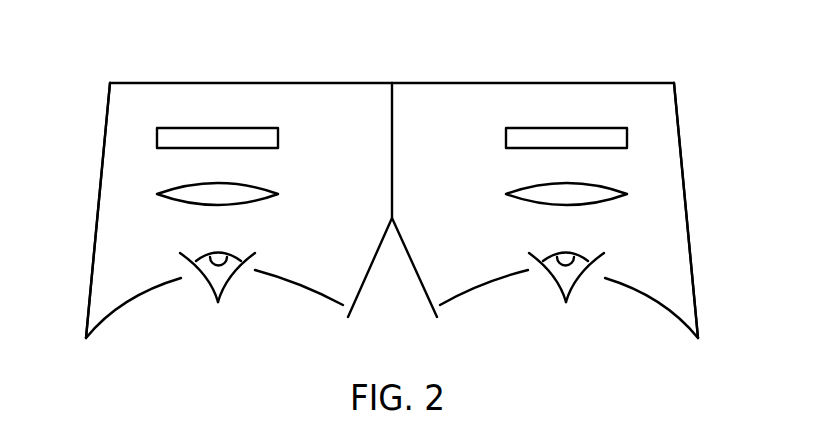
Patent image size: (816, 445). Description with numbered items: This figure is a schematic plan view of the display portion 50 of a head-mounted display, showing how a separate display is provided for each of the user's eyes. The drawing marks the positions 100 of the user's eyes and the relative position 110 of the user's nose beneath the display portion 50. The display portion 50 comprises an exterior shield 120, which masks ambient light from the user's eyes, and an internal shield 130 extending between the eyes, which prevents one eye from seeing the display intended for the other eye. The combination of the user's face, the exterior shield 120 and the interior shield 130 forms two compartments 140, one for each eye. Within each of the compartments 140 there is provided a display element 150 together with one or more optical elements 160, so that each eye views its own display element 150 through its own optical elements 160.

The display portion 50 is at (663, 83).
The positions of the user's eyes 100 is at (228, 285).
The relative position of the user's nose 110 is at (417, 260).
The exterior shield 120 is at (467, 83).
The internal shield 130 is at (393, 152).
The compartments 140 is at (265, 103).
The display element 150 is at (178, 140).
The optical elements 160 is at (160, 195).